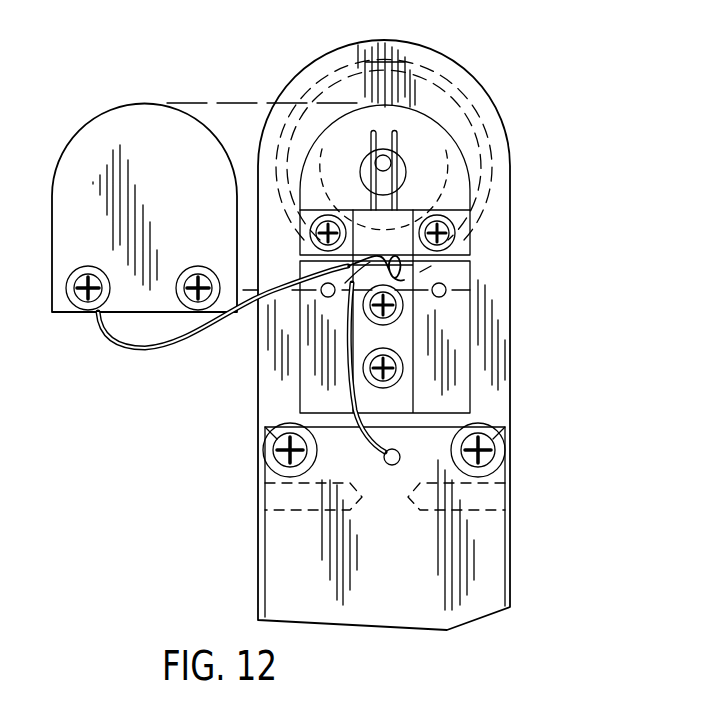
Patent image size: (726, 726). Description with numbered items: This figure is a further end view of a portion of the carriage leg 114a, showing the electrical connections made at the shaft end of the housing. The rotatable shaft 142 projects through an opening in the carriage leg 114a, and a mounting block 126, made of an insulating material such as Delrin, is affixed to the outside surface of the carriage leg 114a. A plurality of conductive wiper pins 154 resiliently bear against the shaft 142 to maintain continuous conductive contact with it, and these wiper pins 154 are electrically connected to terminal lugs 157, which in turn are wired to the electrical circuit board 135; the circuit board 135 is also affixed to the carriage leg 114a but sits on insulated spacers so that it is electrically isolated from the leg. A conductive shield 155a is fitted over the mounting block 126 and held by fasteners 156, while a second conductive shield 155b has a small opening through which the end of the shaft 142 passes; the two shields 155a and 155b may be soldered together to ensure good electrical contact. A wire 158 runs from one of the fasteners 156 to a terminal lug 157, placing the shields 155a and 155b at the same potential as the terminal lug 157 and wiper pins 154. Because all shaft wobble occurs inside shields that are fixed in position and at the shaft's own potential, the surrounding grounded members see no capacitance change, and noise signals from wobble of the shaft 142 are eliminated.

The carriage leg 114a is at (510, 363).
The second conductive shield 155b is at (397, 143).
The mounting block 126 is at (478, 281).
The wiper pins 154 is at (408, 140).
The rotatable shaft 142 is at (400, 178).
The electrical circuit board 135 is at (508, 540).
The conductive shield 155a is at (99, 115).
The fasteners 156 is at (197, 313).
The wire 158 is at (220, 327).
The terminal lugs 157 is at (413, 281).